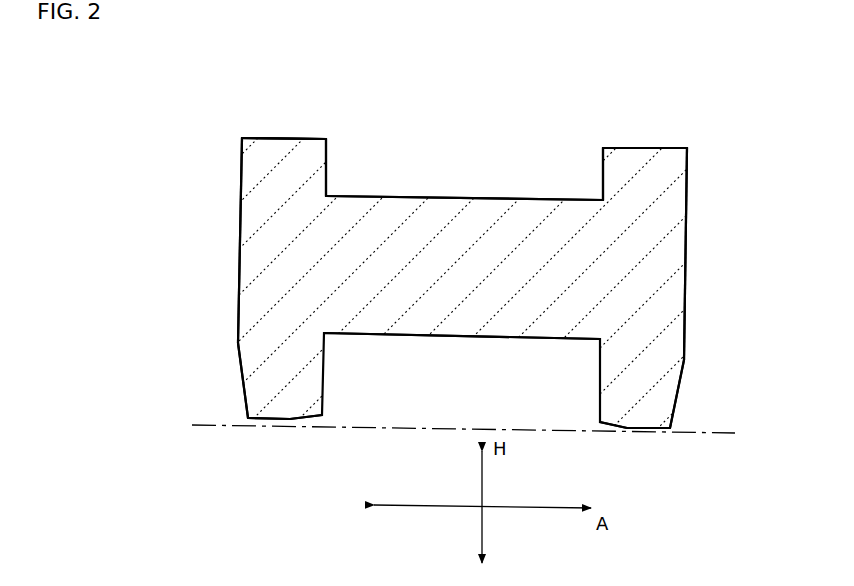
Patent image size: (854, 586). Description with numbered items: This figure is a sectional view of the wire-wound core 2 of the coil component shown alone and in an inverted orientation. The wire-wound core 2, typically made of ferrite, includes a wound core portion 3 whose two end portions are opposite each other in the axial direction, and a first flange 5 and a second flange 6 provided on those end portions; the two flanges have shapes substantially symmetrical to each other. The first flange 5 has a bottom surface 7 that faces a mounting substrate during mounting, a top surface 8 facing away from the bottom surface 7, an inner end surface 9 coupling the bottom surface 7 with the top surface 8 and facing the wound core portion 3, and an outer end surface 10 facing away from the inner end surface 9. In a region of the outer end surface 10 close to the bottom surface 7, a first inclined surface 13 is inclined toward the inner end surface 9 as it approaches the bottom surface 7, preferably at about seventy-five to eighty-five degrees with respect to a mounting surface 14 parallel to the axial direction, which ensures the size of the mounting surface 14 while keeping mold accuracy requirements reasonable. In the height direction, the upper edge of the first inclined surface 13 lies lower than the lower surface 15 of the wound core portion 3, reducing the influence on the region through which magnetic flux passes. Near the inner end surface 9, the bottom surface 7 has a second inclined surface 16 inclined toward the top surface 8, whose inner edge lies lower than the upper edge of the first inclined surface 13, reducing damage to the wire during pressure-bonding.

The wire-wound core 2 is at (553, 91).
The wound core portion 3 is at (463, 196).
The first flange 5 is at (272, 137).
The second flange 6 is at (632, 147).
The bottom surface 7 is at (276, 420).
The top surface 8 is at (306, 139).
The inner end surface 9 is at (327, 156).
The outer end surface 10 is at (240, 210).
The first inclined surface 13 is at (243, 392).
The mounting surface 14 is at (203, 423).
The lower surface 15 is at (444, 335).
The second inclined surface 16 is at (309, 421).